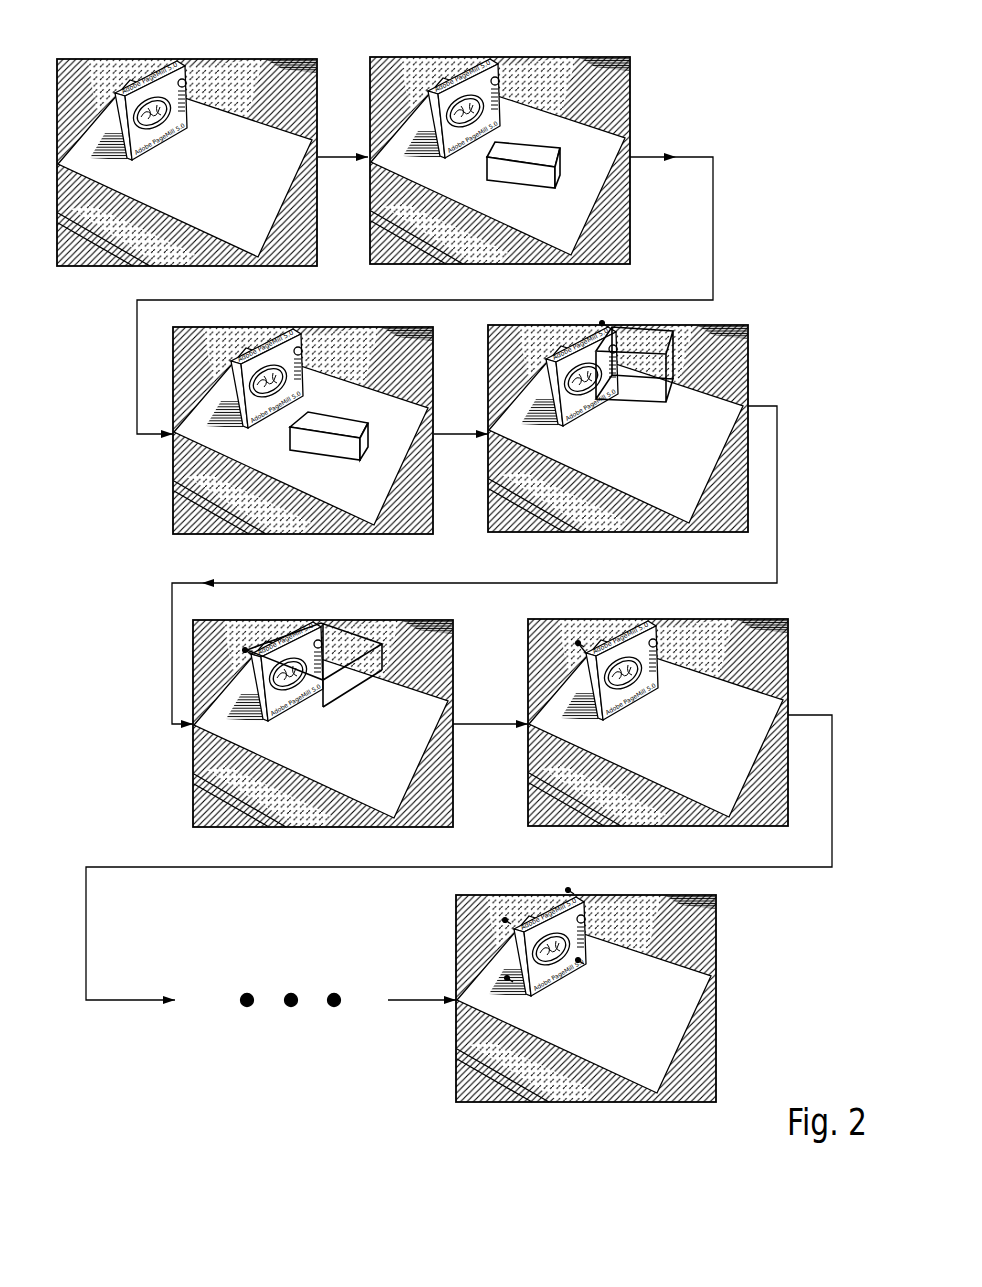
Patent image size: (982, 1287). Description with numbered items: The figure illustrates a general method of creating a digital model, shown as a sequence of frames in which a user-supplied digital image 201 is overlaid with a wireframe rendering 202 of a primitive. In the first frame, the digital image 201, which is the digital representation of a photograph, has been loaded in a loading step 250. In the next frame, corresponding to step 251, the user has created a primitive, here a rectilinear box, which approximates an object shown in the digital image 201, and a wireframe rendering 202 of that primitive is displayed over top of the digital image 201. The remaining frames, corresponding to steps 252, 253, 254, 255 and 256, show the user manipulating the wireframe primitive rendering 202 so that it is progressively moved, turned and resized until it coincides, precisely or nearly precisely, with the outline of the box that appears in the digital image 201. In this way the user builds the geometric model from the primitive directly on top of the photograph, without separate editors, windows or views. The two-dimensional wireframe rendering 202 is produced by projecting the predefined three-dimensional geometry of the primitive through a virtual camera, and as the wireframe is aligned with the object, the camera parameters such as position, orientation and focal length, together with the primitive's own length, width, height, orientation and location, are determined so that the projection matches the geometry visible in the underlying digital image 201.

The digital image 201 is at (211, 82).
The wireframe rendering 202 is at (525, 143).
The step of loading the digital image 250 is at (187, 164).
The step of creating primitives 251 is at (400, 264).
The wireframe manipulation step 252 is at (327, 535).
The wireframe manipulation step 253 is at (641, 532).
The wireframe manipulation step 254 is at (313, 828).
The wireframe manipulation step 255 is at (652, 827).
The wireframe manipulation step 256 is at (716, 1037).